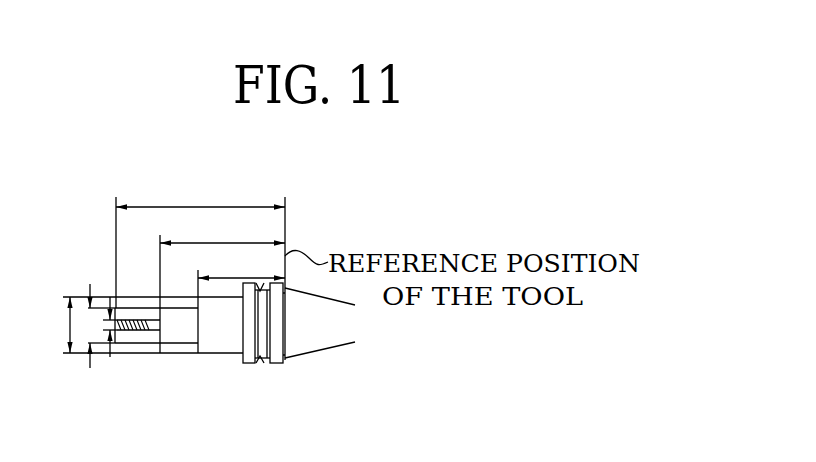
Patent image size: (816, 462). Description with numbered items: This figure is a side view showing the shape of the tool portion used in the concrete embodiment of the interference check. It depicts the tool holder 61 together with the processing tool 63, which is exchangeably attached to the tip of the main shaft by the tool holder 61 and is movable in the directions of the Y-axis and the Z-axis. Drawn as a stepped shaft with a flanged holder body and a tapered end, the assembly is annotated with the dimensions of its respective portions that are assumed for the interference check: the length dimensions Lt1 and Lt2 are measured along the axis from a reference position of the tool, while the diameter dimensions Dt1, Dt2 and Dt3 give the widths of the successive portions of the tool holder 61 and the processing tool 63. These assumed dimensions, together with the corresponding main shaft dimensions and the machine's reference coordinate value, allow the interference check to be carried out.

The tool holder 61 is at (180, 334).
The processing tool 63 is at (140, 331).
The tool portion length dimension Lt1 is at (200, 241).
The tool portion length dimension Lt2 is at (222, 254).
The tool portion diameter dimension Dt1 is at (109, 326).
The tool portion diameter dimension Dt2 is at (89, 326).
The tool portion diameter dimension Dt3 is at (95, 325).